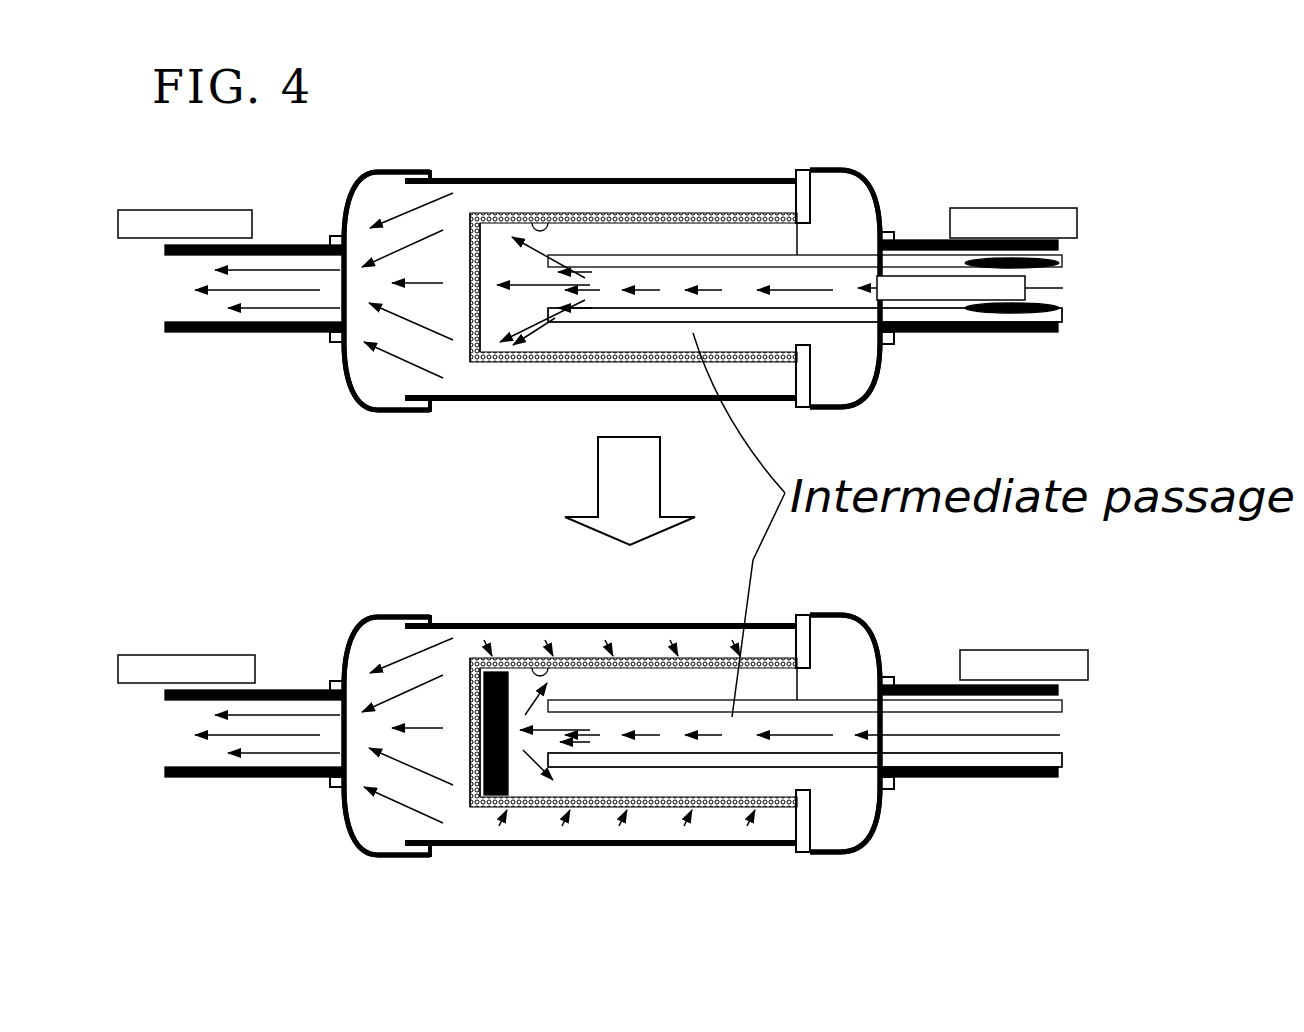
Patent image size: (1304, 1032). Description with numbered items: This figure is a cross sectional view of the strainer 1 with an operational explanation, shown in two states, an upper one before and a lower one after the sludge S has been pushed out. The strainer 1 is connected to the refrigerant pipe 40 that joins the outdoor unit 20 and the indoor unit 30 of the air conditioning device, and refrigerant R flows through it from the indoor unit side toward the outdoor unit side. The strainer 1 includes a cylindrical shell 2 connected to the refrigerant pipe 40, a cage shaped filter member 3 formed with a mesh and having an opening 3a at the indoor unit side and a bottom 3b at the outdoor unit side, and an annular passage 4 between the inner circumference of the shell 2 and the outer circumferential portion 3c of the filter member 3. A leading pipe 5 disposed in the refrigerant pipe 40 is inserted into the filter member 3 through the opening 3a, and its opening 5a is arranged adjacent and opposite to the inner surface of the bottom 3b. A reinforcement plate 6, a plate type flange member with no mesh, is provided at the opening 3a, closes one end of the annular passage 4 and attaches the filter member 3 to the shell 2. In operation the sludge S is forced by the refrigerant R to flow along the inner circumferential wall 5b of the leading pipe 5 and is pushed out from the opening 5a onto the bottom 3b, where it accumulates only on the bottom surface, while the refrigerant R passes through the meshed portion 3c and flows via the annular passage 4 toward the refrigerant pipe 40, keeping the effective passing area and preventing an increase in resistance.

The strainer 1 is at (1054, 103).
The cylindrical shell 2 is at (577, 181).
The cage shaped filter member 3 is at (615, 215).
The opening 3a is at (800, 246).
The bottom 3b is at (483, 265).
The outer circumferential portion 3c is at (533, 222).
The annular passage 4 is at (664, 200).
The leading pipe 5 is at (753, 255).
The opening 5a is at (540, 292).
The inner circumferential wall 5b is at (727, 313).
The reinforcement plate 6 is at (795, 375).
The outdoor unit 20 is at (203, 210).
The indoor unit 30 is at (1011, 208).
The refrigerant pipe 40 is at (286, 245).
The refrigerant R is at (686, 652).
The sludge S is at (1058, 308).